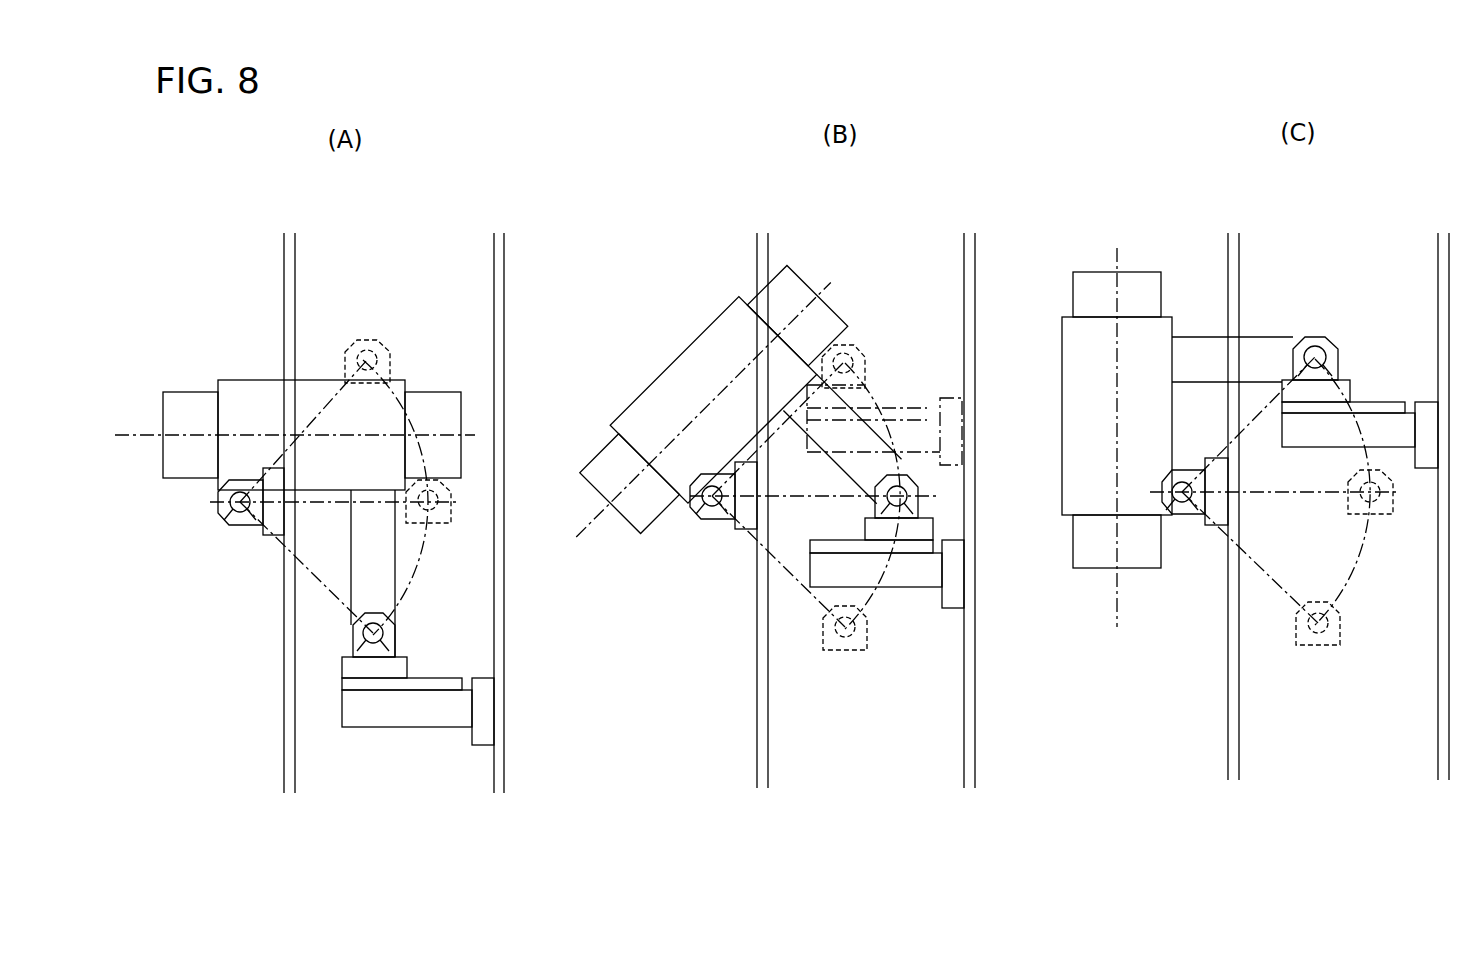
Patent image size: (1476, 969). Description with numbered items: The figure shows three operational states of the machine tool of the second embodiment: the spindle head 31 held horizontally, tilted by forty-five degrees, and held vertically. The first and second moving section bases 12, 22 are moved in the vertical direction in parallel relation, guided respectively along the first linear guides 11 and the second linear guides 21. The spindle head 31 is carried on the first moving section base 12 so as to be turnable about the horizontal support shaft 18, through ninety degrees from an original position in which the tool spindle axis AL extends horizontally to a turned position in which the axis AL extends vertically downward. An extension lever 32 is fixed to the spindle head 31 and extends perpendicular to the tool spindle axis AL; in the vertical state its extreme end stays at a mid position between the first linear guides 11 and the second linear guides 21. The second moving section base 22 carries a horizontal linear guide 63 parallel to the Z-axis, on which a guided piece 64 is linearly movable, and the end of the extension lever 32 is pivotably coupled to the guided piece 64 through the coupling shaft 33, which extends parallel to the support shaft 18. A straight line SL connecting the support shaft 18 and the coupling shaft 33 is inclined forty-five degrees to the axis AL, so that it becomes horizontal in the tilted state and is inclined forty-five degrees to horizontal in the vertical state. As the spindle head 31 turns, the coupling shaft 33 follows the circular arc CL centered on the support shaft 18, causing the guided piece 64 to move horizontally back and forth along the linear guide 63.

The first linear guides 11 is at (287, 270).
The first moving section base 12 is at (262, 520).
The horizontal support shaft 18 is at (228, 505).
The second linear guides 21 is at (494, 277).
The second moving section base 22 is at (417, 712).
The spindle head 31 is at (248, 402).
The extension lever 32 is at (380, 545).
The coupling shaft 33 is at (385, 635).
The horizontal linear guide 63 is at (433, 687).
The guided piece 64 is at (353, 673).
The tool spindle axis AL is at (135, 435).
The straight line SL is at (322, 587).
The circular arc CL is at (415, 575).